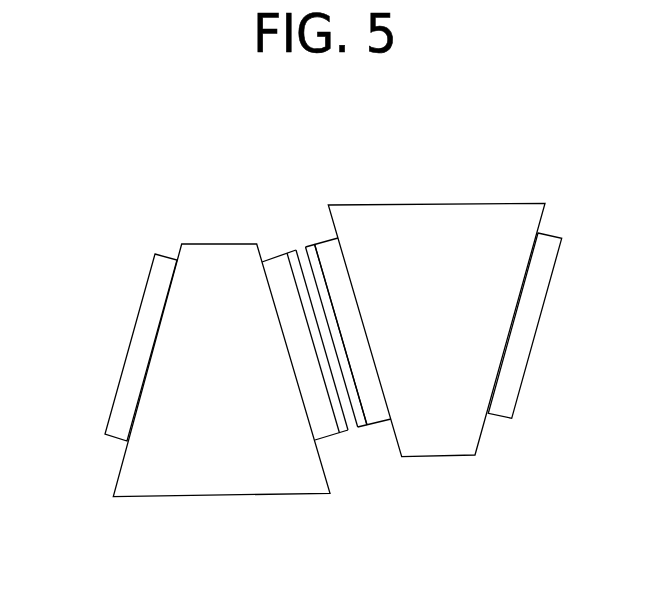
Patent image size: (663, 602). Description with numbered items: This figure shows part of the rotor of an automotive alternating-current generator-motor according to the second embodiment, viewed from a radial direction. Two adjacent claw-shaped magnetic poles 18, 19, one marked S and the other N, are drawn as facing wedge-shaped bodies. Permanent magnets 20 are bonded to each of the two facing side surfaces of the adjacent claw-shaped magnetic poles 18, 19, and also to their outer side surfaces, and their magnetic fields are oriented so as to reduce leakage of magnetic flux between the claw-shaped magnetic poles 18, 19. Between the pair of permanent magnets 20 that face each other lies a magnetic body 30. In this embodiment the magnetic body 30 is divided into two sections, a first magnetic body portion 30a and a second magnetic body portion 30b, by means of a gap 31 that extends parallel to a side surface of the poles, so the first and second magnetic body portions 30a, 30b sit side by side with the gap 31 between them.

The claw-shaped magnetic pole 18 is at (440, 215).
The claw-shaped magnetic pole 19 is at (185, 463).
The permanent magnet 20 is at (140, 350).
The magnetic body 30 is at (409, 351).
The first magnetic body portion 30a is at (345, 338).
The second magnetic body portion 30b is at (295, 262).
The gap 31 is at (333, 350).